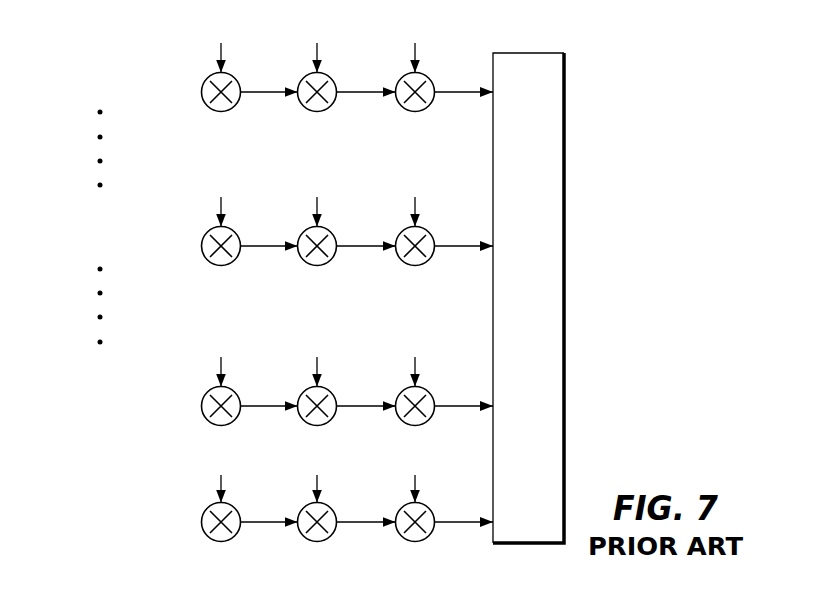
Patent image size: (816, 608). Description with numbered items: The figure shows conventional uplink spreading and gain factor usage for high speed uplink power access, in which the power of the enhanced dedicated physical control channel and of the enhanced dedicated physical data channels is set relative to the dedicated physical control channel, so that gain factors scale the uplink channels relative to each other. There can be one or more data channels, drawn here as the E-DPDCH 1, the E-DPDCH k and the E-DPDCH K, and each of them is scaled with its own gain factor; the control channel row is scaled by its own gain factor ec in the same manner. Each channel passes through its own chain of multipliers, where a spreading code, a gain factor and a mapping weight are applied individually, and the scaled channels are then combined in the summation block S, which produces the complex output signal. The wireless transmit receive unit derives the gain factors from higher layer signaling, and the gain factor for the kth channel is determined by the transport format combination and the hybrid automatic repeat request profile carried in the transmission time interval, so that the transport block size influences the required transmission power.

The E-DPDCH channel 1 processing chain 1 is at (202, 92).
The E-DPDCH channel k processing chain k is at (202, 246).
The E-DPDCH channel K processing chain K is at (202, 406).
The E-DPCCH channel processing chain ec is at (202, 522).
The summation block producing S_e-dpch output S is at (715, 298).